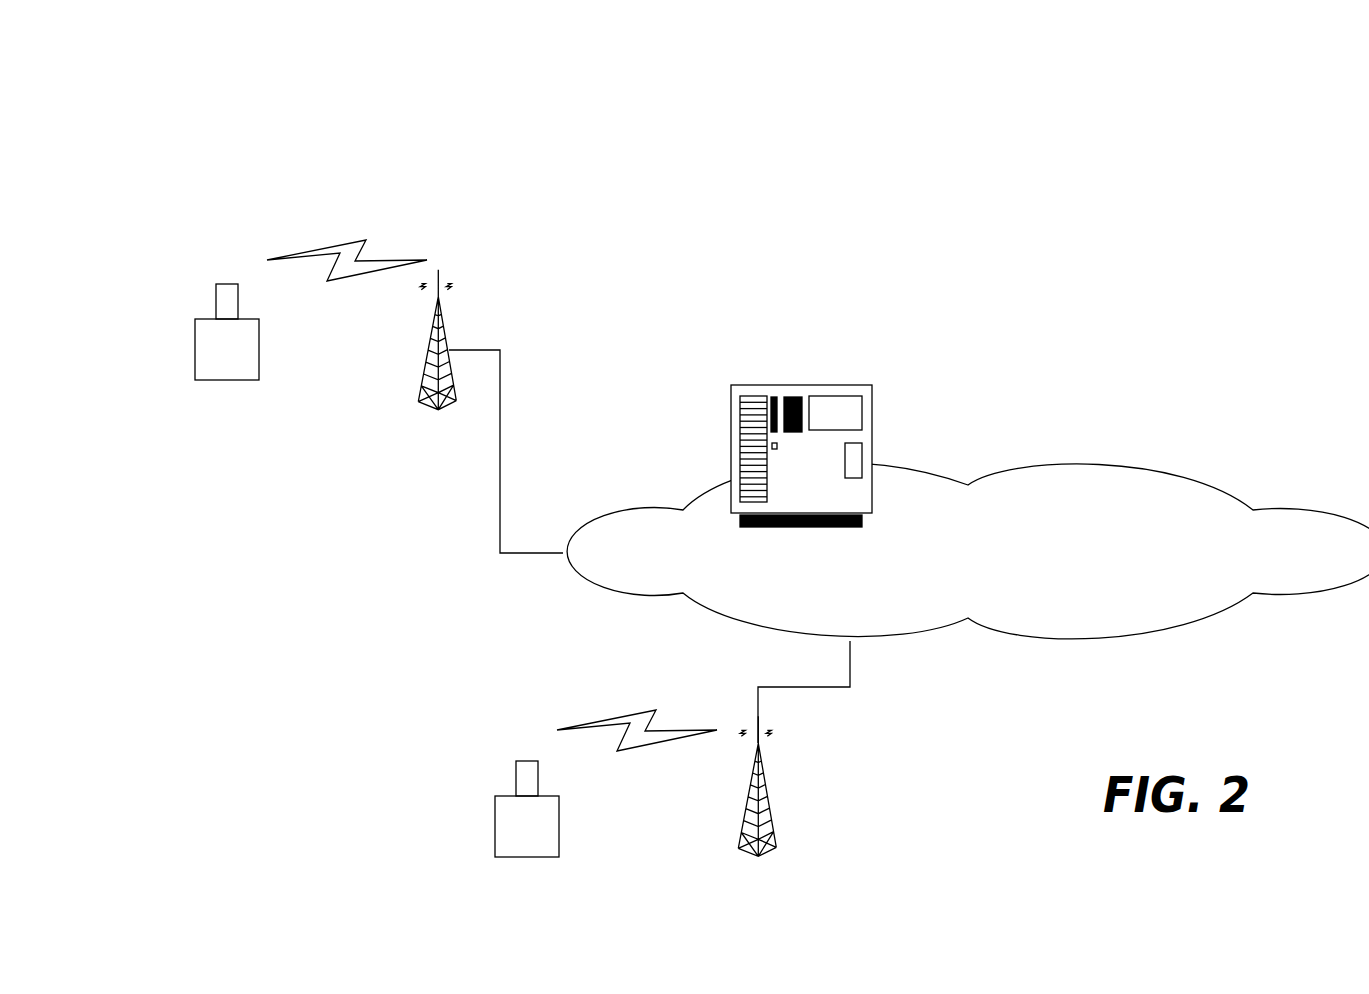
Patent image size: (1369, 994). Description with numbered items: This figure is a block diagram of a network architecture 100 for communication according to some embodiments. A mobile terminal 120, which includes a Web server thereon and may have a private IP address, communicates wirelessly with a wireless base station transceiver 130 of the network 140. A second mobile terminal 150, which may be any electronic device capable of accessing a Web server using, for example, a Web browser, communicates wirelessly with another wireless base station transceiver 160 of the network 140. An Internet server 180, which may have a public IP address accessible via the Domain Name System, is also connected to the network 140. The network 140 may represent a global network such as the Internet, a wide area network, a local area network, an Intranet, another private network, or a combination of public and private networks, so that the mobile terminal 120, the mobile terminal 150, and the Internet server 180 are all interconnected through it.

The communication system 100 is at (434, 127).
The mobile terminal 120 is at (195, 347).
The wireless base station transceiver 130 is at (438, 288).
The network 140 is at (995, 585).
The mobile terminal 150 is at (495, 827).
The wireless base station transceiver 160 is at (762, 787).
The Internet server 180 is at (798, 383).